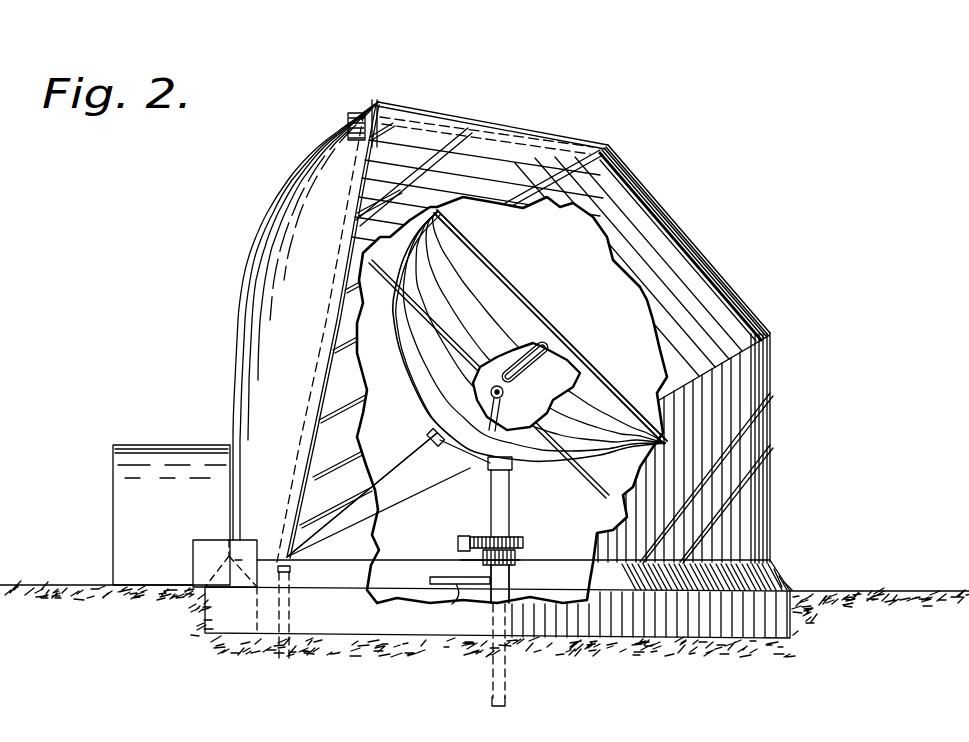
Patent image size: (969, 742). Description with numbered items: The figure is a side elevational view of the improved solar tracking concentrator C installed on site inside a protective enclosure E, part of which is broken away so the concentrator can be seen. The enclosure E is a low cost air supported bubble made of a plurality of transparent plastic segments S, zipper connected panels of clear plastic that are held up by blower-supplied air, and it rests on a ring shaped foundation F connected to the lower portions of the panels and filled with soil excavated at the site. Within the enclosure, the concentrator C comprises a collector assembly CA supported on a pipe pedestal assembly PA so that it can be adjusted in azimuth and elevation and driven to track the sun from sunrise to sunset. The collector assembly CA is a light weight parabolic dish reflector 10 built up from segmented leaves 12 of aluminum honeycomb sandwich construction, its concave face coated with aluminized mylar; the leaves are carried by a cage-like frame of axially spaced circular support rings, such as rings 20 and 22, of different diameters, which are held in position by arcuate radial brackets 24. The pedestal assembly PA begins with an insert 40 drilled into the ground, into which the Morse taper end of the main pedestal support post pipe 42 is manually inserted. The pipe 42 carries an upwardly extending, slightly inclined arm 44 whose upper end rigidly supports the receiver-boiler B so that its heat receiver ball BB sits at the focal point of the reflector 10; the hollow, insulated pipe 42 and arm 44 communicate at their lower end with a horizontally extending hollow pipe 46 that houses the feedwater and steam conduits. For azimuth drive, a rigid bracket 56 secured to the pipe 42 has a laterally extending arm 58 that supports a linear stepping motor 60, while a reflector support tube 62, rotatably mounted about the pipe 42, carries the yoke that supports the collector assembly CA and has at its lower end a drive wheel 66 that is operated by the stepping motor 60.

The parabolic dish reflector 10 is at (575, 304).
The segmented leaves 12 is at (465, 250).
The support ring 20 is at (430, 331).
The support ring 22 is at (614, 384).
The arcuate radial brackets 24 is at (404, 309).
The insert 40 is at (490, 606).
The main pedestal support post pipe 42 is at (511, 581).
The arm 44 is at (537, 400).
The horizontally extending hollow pipe 46 is at (454, 598).
The rigid bracket 56 is at (517, 559).
The laterally extending arm 58 is at (476, 562).
The linear stepping motor 60 is at (457, 542).
The reflector support tube 62 is at (489, 492).
The drive wheel 66 is at (518, 540).
The protective enclosure E is at (438, 100).
The transparent plastic segments S is at (562, 134).
The foundation F is at (789, 578).
The receiver-boiler B is at (552, 346).
The heat receiver ball BB is at (496, 383).
The concentrator C is at (414, 435).
The collector assembly CA is at (400, 388).
The pipe pedestal assembly PA is at (484, 517).